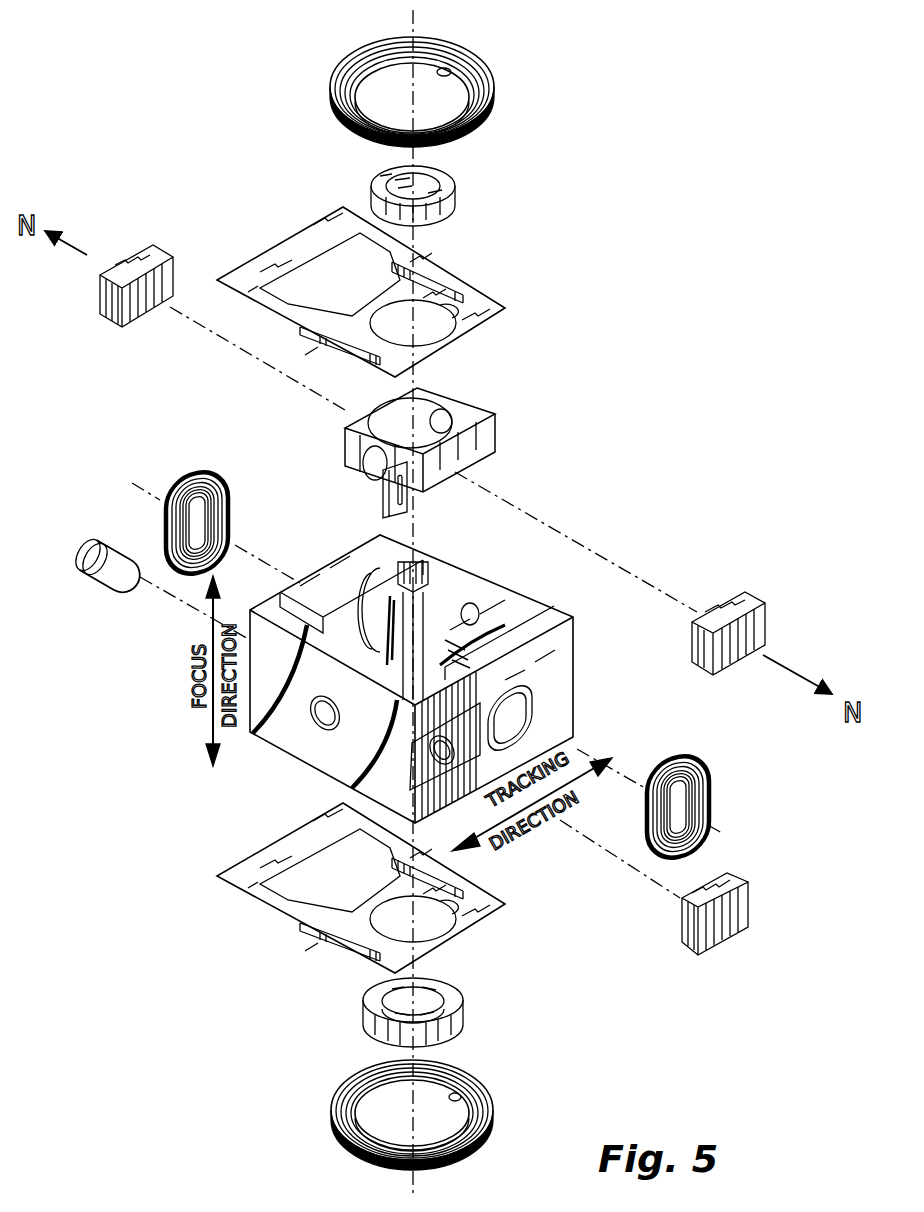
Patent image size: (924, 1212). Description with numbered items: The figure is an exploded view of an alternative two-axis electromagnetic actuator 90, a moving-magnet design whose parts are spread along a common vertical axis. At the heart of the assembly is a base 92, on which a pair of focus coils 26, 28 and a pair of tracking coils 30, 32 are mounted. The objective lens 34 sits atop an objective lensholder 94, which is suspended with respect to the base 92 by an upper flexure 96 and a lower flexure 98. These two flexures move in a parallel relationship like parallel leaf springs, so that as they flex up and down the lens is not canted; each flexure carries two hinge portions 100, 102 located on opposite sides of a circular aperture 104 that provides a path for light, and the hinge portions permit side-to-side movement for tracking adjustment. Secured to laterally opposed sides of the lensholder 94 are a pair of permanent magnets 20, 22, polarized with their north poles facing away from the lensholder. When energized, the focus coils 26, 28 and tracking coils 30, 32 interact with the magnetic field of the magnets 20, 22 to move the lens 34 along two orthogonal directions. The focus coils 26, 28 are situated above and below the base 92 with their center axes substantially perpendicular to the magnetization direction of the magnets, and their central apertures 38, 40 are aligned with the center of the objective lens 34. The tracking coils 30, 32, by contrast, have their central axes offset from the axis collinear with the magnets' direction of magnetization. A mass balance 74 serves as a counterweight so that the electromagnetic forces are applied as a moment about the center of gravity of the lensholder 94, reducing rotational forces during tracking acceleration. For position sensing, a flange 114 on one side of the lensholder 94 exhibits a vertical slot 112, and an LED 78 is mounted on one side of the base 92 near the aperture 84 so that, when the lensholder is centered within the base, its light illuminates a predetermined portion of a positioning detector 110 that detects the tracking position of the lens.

The permanent magnet 20 is at (137, 257).
The permanent magnet 22 is at (748, 595).
The focus coil 26 is at (494, 108).
The focus coil 28 is at (332, 1120).
The tracking coil 30 is at (197, 473).
The tracking coil 32 is at (685, 752).
The objective lens 34 is at (442, 176).
The central aperture 38 is at (447, 70).
The central aperture 40 is at (460, 1096).
The mass balance 74 is at (464, 1018).
The LED 78 is at (93, 533).
The second aperture 84 is at (415, 760).
The two-axis electromagnetic actuator 90 is at (742, 122).
The base 92 is at (283, 727).
The objective lensholder 94 is at (500, 430).
The upper flexure 96 is at (290, 238).
The lower flexure 98 is at (254, 854).
The hinge portion 100 is at (458, 290).
The hinge portion 102 is at (367, 356).
The circular aperture 104 is at (453, 318).
The positioning detector 110 is at (740, 873).
The vertical slot 112 is at (427, 493).
The flange 114 is at (385, 493).